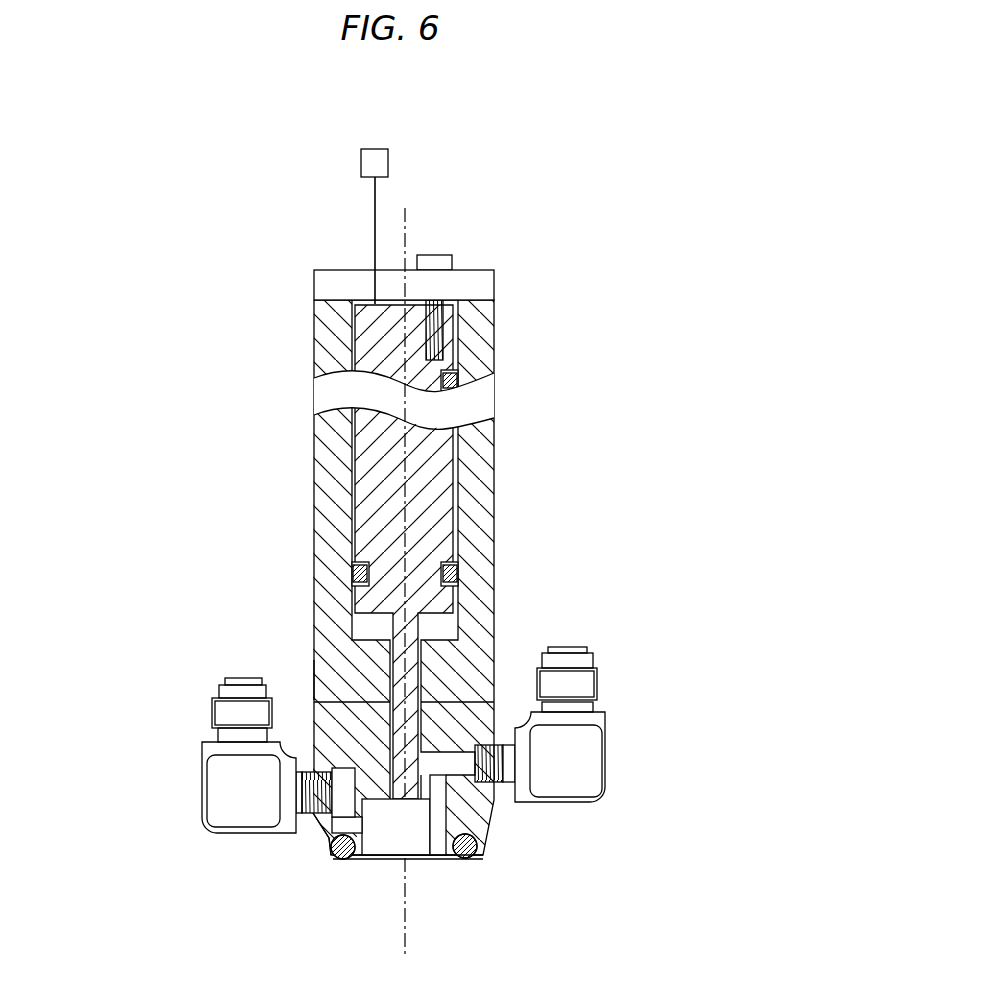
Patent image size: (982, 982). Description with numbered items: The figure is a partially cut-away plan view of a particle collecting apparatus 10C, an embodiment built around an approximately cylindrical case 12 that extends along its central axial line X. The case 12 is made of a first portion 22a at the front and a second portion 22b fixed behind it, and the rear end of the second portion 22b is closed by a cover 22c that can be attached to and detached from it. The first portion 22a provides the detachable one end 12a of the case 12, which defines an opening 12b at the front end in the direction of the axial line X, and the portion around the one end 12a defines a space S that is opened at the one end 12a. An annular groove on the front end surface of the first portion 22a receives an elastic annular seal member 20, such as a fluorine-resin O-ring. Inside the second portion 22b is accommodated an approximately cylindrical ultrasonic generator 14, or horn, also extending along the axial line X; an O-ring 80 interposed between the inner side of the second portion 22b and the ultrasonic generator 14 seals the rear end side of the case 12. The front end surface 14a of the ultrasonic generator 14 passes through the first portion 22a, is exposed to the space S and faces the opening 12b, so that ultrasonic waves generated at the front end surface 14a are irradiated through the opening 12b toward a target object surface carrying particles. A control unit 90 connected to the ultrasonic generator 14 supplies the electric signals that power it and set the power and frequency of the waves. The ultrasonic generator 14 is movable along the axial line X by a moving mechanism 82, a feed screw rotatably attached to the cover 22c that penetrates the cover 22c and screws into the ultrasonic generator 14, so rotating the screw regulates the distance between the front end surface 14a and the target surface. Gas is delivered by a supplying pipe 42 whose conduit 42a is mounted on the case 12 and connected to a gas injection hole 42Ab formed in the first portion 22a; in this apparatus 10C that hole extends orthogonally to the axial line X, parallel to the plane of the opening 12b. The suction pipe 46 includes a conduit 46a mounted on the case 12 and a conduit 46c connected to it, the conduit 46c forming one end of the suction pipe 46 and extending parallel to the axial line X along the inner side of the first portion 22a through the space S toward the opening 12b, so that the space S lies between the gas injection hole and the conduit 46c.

The particle collecting apparatus 10C is at (582, 194).
The case 12 is at (512, 458).
The one end 12a is at (456, 858).
The opening 12b is at (414, 862).
The ultrasonic generator 14 is at (444, 512).
The front end surface 14a is at (379, 832).
The seal member 20 is at (338, 858).
The first portion 22a is at (313, 815).
The second portion 22b is at (314, 685).
The cover 22c is at (342, 268).
The supplying pipe 42 is at (205, 758).
The conduit 42a is at (196, 719).
The gas injection hole 42Ab is at (343, 810).
The suction pipe 46 is at (614, 724).
The conduit 46a is at (607, 723).
The conduit 46c is at (446, 812).
The O-ring 80 is at (458, 380).
The moving mechanism 82 is at (446, 262).
The control unit 90 is at (377, 147).
The axial line X is at (407, 225).
The space S is at (397, 803).